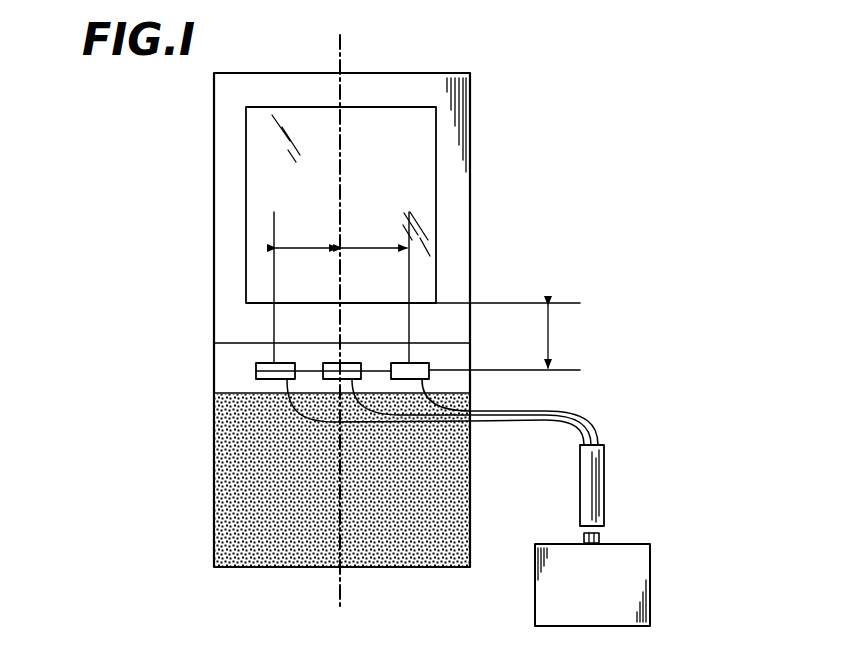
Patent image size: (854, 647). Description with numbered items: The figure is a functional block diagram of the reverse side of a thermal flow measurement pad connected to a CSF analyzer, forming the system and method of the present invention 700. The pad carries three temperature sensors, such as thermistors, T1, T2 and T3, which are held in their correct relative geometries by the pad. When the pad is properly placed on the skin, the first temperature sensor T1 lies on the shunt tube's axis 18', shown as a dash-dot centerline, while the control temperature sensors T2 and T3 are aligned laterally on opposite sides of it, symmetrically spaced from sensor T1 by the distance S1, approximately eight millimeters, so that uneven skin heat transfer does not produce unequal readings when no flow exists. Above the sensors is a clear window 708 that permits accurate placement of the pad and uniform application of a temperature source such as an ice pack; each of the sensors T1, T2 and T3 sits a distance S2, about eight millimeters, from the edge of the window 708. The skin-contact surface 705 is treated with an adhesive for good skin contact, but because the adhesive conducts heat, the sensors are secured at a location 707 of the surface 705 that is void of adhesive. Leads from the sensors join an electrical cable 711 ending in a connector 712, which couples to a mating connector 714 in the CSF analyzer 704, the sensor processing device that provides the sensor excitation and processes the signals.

The system and method of the present invention 700 is at (148, 172).
The CSF analyzer 704 is at (658, 591).
The skin-contact surface 705 is at (229, 457).
The location void of adhesive 707 is at (273, 327).
The clear window 708 is at (430, 165).
The electrical cable 711 is at (573, 413).
The connector 712 is at (595, 468).
The mating connector 714 is at (600, 541).
The shunt tube's axis 18' is at (384, 336).
The first temperature sensor T1 is at (323, 371).
The control temperature sensor T2 is at (391, 371).
The control temperature sensor T3 is at (256, 371).
The distance S1 is at (310, 245).
The distance S2 is at (550, 343).